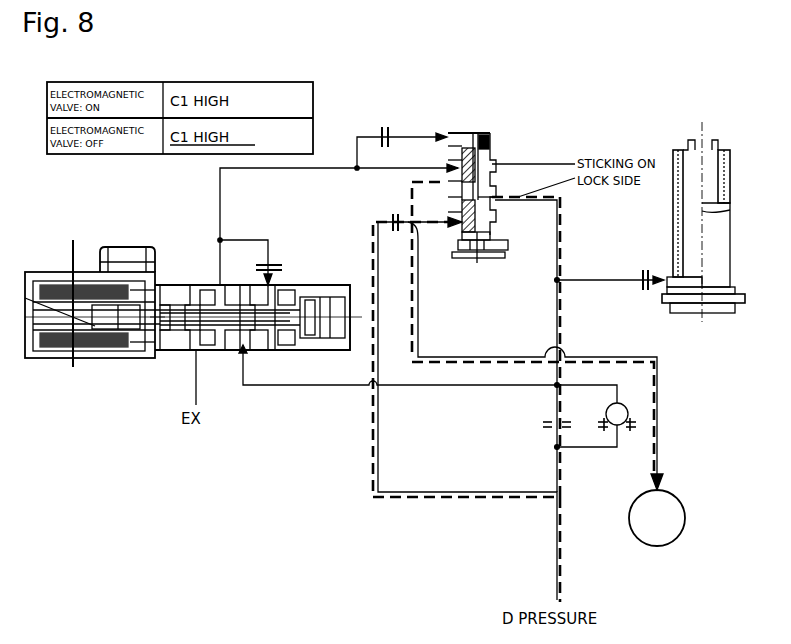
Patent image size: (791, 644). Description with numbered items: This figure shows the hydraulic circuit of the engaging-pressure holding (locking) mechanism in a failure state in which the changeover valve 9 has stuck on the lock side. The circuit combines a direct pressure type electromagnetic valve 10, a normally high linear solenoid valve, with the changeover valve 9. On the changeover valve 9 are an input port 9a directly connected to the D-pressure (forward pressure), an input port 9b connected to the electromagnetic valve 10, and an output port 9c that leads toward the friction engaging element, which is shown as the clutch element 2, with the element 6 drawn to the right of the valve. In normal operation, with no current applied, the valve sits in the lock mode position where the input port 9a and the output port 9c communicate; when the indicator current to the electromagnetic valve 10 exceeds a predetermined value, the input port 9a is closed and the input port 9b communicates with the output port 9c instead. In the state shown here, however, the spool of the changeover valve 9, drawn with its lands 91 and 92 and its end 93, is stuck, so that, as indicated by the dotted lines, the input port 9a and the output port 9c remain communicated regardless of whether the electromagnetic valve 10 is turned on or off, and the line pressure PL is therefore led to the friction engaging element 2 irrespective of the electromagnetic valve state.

The electromagnetic valve 10 is at (125, 228).
The changeover valve 9 is at (478, 118).
The input port 9a is at (494, 196).
The input port 9b is at (456, 165).
The output port 9c is at (460, 196).
The spool land 91 is at (486, 208).
The spool land 92 is at (492, 163).
The spool end 93 is at (492, 140).
The hydraulic cylinder / accumulator 6 is at (703, 134).
The clutch C-1 2 is at (657, 548).
The line pressure PL is at (658, 410).